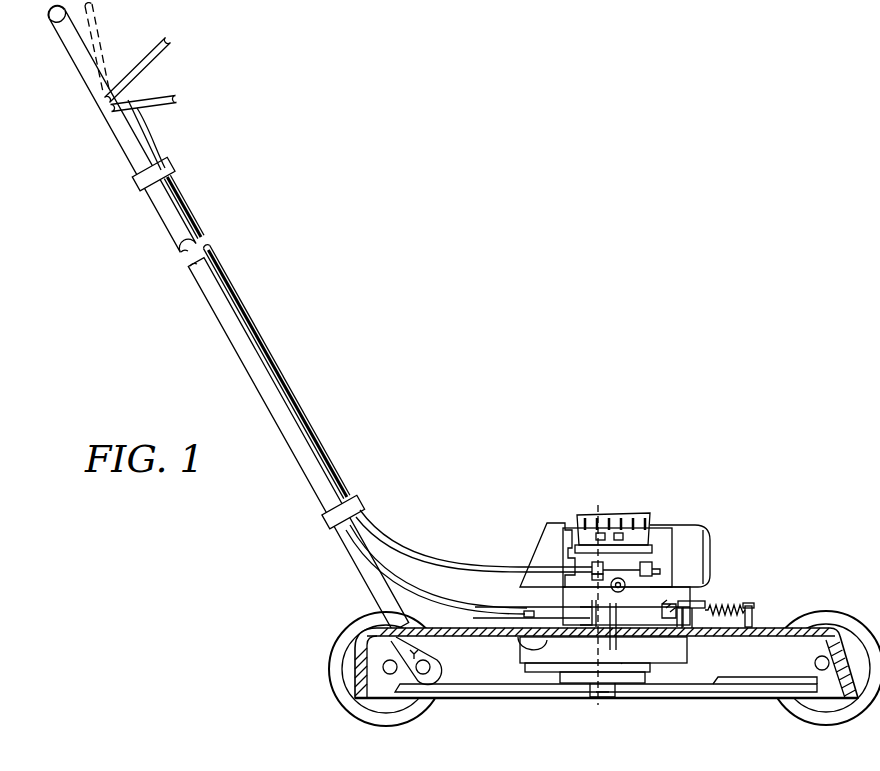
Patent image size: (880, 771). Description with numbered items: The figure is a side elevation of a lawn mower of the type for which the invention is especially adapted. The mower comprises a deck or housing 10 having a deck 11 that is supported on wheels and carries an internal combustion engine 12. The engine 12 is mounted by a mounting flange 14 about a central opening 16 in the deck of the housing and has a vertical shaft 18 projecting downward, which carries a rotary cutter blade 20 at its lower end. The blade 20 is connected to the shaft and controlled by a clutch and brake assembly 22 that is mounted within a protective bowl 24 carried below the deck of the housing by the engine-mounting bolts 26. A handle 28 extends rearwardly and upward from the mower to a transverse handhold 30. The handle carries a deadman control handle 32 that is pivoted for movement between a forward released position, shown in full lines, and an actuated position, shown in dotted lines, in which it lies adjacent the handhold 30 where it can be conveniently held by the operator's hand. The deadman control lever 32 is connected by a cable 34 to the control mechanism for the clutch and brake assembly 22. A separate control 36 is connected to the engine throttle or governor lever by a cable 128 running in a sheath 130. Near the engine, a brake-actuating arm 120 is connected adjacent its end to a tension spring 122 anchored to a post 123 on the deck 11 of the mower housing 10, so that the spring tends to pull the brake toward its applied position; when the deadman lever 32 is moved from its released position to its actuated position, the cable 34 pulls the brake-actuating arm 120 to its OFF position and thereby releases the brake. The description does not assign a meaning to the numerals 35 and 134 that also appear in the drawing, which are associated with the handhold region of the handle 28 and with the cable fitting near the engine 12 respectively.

The deck or housing 10 is at (740, 706).
The deck 11 is at (822, 632).
The internal combustion engine 12 is at (720, 513).
The mounting flange 14 is at (520, 619).
The central opening 16 is at (528, 650).
The vertical shaft 18 is at (636, 698).
The rotary cutter blade 20 is at (503, 690).
The clutch and brake assembly 22 is at (580, 682).
The protective bowl 24 is at (553, 657).
The engine-mounting bolts 26 is at (527, 609).
The handle 28 is at (215, 300).
The transverse handhold 30 is at (55, 20).
The deadman control handle 32 is at (167, 47).
The cable 34 is at (150, 130).
The cross bar 35 is at (180, 104).
The separate control 36 is at (601, 563).
The brake-actuating arm 120 is at (703, 603).
The tension spring 122 is at (737, 606).
The post 123 is at (753, 619).
The cable 128 is at (649, 570).
The sheath 130 is at (509, 565).
The cable end fitting 134 is at (662, 571).